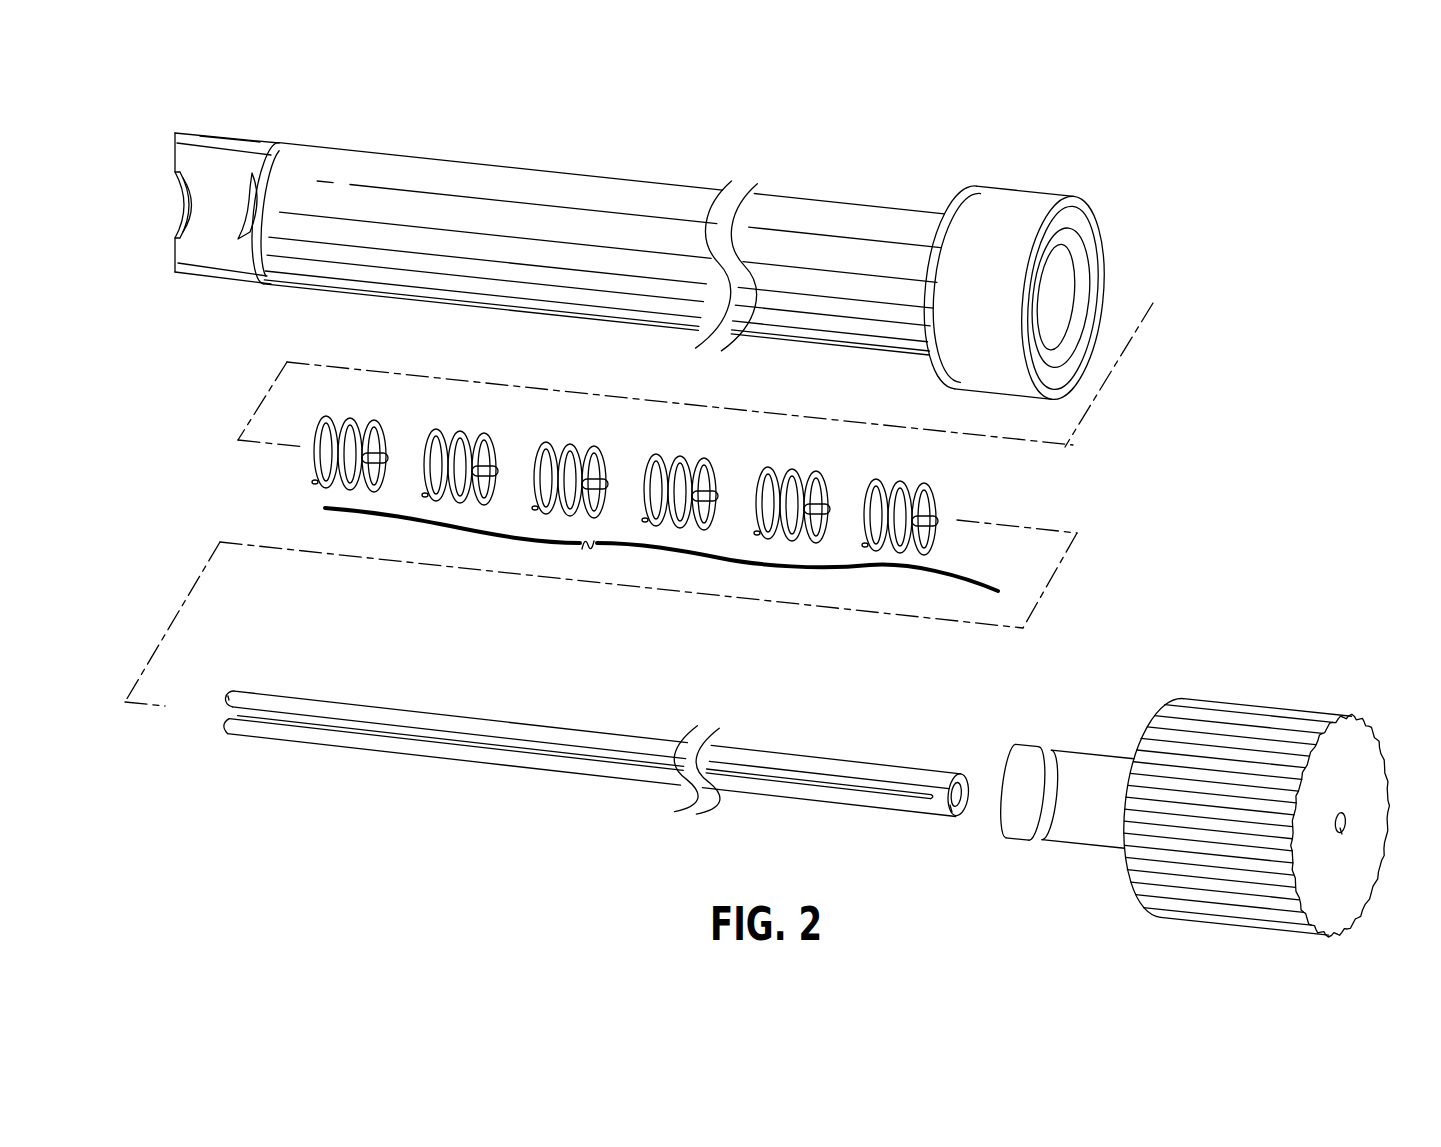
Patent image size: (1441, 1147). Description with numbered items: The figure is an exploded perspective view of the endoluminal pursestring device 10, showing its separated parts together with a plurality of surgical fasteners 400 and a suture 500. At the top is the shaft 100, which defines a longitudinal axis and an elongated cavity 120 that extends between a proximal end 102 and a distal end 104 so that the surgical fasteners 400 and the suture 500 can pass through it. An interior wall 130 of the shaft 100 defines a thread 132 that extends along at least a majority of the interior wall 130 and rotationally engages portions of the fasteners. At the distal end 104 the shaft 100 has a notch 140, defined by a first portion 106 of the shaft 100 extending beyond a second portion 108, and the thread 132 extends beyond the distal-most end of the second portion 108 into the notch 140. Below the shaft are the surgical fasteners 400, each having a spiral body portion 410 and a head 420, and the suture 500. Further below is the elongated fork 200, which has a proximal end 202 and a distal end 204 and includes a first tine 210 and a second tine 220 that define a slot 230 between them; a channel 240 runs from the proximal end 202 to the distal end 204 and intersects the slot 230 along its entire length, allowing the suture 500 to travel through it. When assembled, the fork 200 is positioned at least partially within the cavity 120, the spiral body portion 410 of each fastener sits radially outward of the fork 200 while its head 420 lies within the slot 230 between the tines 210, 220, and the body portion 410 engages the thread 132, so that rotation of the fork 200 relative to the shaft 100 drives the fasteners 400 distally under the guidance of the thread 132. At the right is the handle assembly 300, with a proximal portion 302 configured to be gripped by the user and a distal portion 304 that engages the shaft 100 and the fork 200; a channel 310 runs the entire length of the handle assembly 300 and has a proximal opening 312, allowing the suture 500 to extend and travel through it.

The endoluminal pursestring device 10 is at (705, 114).
The shaft 100 is at (546, 159).
The proximal end 102 is at (1032, 278).
The distal end 104 is at (184, 230).
The first portion 106 is at (229, 143).
The second portion 108 is at (299, 170).
The elongated cavity 120 is at (1060, 226).
The interior wall 130 is at (213, 218).
The thread 132 is at (253, 180).
The notch 140 is at (164, 207).
The elongated fork 200 is at (475, 697).
The proximal end 202 is at (945, 811).
The distal end 204 is at (228, 732).
The first tine 210 is at (593, 740).
The second tine 220 is at (590, 767).
The slot 230 is at (585, 757).
The channel 240 is at (958, 795).
The handle assembly 300 is at (1222, 673).
The proximal portion 302 is at (1257, 817).
The distal portion 304 is at (1065, 796).
The channel 310 is at (1340, 822).
The proximal opening 312 is at (1345, 833).
The surgical fasteners 400 is at (695, 485).
The spiral body portion 410 is at (925, 498).
The head 420 is at (934, 518).
The suture 500 is at (983, 584).